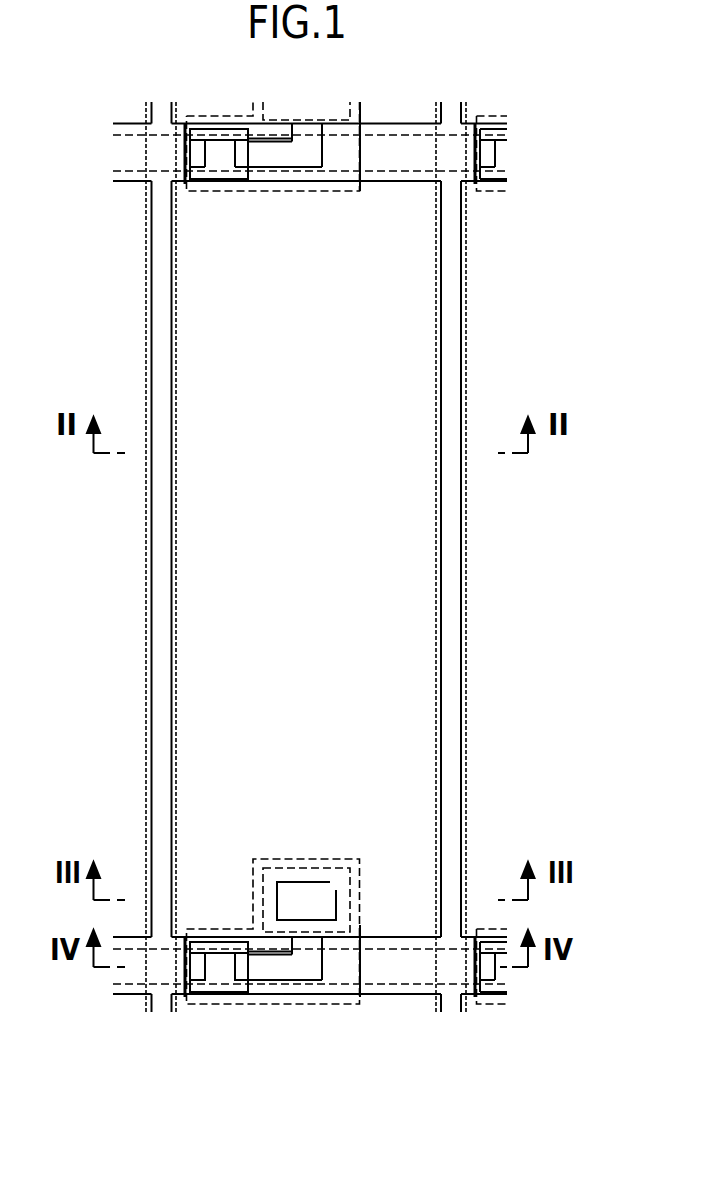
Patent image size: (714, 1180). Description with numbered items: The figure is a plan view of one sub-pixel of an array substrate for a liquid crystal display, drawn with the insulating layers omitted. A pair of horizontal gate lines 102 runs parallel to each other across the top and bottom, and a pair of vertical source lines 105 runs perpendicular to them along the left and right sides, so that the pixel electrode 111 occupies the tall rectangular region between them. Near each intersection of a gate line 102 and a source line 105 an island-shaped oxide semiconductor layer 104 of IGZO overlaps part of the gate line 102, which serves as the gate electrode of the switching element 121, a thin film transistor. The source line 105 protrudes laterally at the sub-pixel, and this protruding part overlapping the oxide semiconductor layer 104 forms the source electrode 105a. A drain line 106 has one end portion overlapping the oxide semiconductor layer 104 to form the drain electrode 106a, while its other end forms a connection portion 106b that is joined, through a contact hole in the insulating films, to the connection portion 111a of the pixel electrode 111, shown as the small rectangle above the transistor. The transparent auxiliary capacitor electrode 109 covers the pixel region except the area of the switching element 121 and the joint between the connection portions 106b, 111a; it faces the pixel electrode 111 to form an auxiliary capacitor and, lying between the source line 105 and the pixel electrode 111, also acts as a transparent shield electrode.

The gate line 102 is at (335, 970).
The oxide semiconductor layer 104 is at (223, 972).
The source line 105 is at (146, 698).
The source electrode 105a is at (199, 972).
The drain line 106 is at (281, 980).
The drain electrode 106a is at (243, 972).
The connection portion 106b is at (343, 907).
The transparent auxiliary capacitor electrode 109 is at (362, 966).
The pixel electrode 111 is at (338, 540).
The connection portion 111a is at (336, 888).
The switching element 121 is at (214, 957).